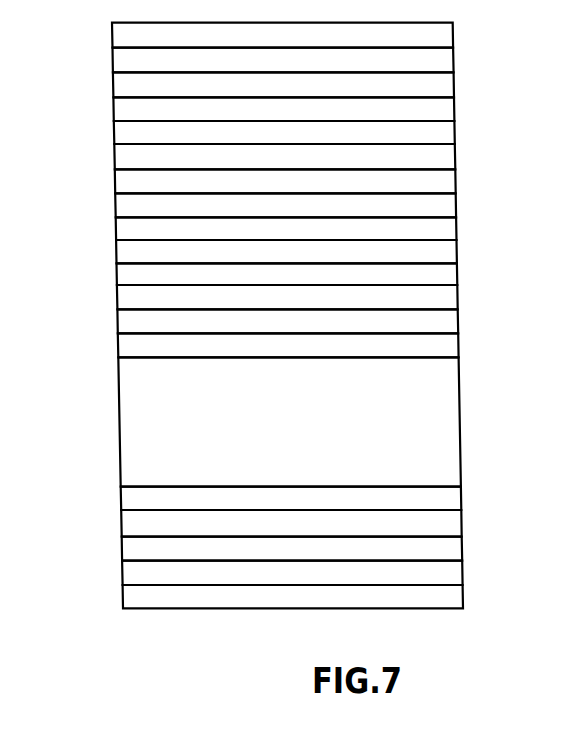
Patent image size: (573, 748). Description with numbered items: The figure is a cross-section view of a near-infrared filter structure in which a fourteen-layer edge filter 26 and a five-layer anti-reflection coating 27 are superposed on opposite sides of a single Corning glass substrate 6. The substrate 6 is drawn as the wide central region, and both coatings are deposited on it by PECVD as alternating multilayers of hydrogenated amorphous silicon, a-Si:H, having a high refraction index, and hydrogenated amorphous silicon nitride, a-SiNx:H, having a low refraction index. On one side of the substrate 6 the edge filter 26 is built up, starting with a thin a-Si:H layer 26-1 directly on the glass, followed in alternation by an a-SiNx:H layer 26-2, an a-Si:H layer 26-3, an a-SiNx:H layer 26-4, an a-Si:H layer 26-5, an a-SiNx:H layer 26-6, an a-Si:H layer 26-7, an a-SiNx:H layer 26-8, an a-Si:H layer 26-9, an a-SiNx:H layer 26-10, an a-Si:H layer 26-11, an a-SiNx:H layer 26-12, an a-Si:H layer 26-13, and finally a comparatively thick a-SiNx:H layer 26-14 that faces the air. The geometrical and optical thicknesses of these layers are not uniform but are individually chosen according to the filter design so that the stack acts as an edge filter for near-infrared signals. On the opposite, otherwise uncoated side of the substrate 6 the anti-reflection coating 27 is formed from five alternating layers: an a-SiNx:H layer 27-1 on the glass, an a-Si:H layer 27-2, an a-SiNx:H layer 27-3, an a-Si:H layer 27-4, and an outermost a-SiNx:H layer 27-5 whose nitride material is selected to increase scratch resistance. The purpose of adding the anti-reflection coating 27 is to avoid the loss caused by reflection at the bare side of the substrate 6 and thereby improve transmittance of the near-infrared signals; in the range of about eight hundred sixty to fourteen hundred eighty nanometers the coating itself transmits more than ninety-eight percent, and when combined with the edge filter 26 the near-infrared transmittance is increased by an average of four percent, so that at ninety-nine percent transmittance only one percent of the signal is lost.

The glass substrate 6 is at (289, 421).
The edge filter 26 is at (100, 22).
The anti-reflection coating 27 is at (112, 475).
The a-Si:H layer 26-1 is at (452, 345).
The a-SiNx:H layer 26-2 is at (452, 321).
The a-Si:H layer 26-3 is at (452, 297).
The a-SiNx:H layer 26-4 is at (451, 274).
The a-Si:H layer 26-5 is at (451, 252).
The a-SiNx:H layer 26-6 is at (450, 229).
The a-Si:H layer 26-7 is at (450, 205).
The a-SiNx:H layer 26-8 is at (450, 181).
The a-Si:H layer 26-9 is at (449, 157).
The a-SiNx:H layer 26-10 is at (449, 132).
The a-Si:H layer 26-11 is at (448, 109).
The a-SiNx:H layer 26-12 is at (448, 85).
The a-Si:H layer 26-13 is at (447, 60).
The a-SiNx:H layer 26-14 is at (447, 35).
The a-SiNx:H layer 27-1 is at (453, 503).
The a-Si:H layer 27-2 is at (454, 527).
The a-SiNx:H layer 27-3 is at (454, 552).
The a-Si:H layer 27-4 is at (454, 575).
The a-SiNx:H layer 27-5 is at (455, 600).